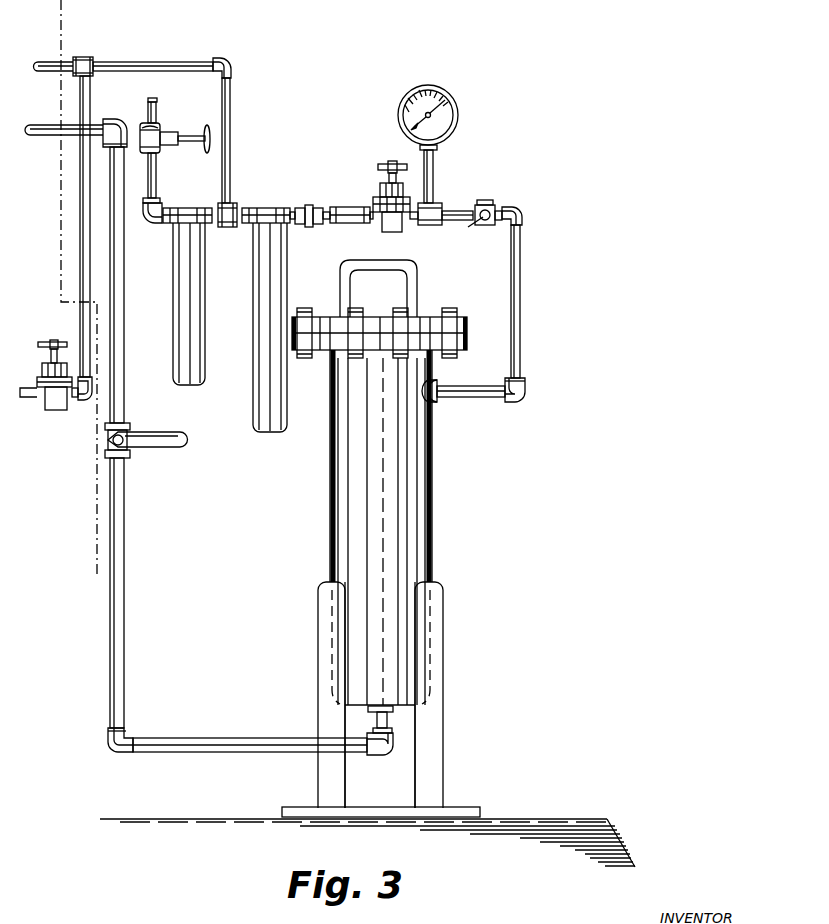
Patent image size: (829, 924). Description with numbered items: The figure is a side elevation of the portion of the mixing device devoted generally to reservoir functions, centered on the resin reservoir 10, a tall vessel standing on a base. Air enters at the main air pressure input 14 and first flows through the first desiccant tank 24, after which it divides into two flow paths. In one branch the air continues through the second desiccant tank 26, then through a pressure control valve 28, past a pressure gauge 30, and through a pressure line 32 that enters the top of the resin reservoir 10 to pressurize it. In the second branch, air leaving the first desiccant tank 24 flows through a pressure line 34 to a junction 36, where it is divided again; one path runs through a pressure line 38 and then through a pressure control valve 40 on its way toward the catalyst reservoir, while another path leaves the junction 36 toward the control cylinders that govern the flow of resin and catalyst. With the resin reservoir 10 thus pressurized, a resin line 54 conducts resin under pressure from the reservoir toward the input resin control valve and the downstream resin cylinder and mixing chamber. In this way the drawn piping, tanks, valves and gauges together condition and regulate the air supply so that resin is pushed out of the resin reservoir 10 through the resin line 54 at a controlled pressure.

The resin reservoir 10 is at (330, 507).
The main air pressure input 14 is at (160, 101).
The first desiccant tank 24 is at (173, 275).
The second desiccant tank 26 is at (253, 274).
The pressure control valve 28 is at (385, 230).
The pressure gauge 30 is at (397, 108).
The pressure line 32 is at (510, 265).
The pressure line 34 is at (232, 120).
The junction 36 is at (83, 57).
The pressure line 38 is at (80, 181).
The pressure control valve 40 is at (45, 406).
The resin line 54 is at (110, 616).